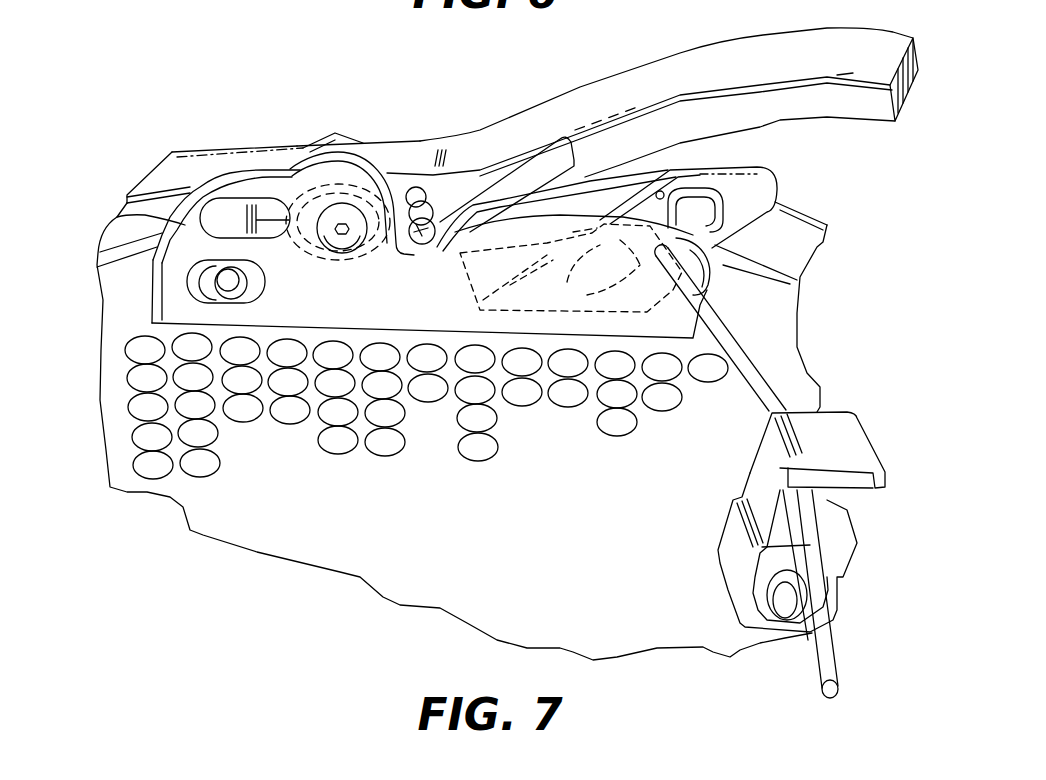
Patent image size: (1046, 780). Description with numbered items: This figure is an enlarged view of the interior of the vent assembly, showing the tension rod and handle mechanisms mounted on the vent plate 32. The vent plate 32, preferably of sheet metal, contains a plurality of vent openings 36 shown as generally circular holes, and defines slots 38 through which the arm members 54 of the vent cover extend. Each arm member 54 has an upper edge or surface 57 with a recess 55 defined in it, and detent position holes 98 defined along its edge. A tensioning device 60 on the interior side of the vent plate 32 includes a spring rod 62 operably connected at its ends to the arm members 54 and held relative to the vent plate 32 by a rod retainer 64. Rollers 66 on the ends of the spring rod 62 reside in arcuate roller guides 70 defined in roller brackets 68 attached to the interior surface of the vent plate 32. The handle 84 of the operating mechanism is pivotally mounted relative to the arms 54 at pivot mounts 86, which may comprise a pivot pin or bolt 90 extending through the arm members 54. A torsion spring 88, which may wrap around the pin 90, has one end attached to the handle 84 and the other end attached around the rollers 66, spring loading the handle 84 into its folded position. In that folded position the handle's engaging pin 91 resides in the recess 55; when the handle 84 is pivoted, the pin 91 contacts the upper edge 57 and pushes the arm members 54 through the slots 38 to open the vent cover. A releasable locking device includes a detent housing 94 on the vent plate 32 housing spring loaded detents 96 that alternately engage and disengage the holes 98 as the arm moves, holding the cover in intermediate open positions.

The vent plate 32 is at (257, 530).
The vent openings 36 is at (485, 451).
The slots 38 is at (313, 325).
The arm members 54 is at (160, 312).
The recess 55 is at (460, 257).
The upper edge or surface 57 is at (285, 170).
The tensioning device 60 is at (834, 482).
The spring rod 62 is at (747, 378).
The rod retainer 64 is at (860, 448).
The rollers 66 is at (713, 293).
The roller brackets 68 is at (760, 193).
The roller guides 70 is at (750, 240).
The handle 84 is at (762, 58).
The pivot mounts 86 is at (372, 133).
The torsion spring 88 is at (517, 187).
The pivot pin or bolt 90 is at (358, 236).
The engaging pin 91 is at (441, 222).
The detent housing 94 is at (218, 223).
The spring loaded detents 96 is at (238, 283).
The detent position holes 98 is at (263, 208).